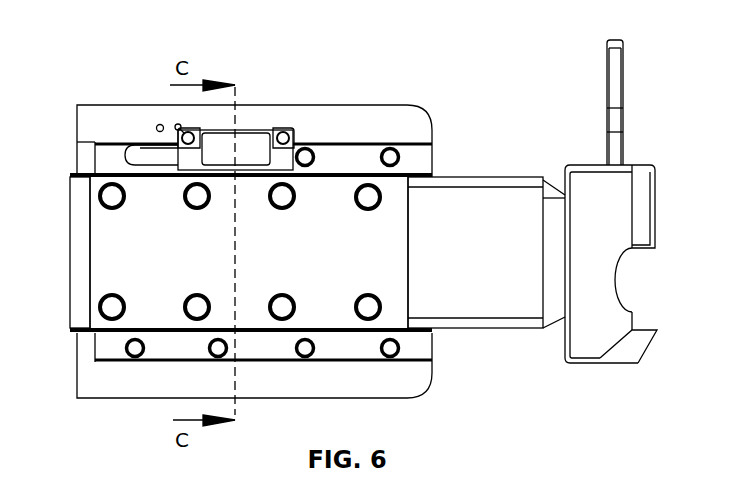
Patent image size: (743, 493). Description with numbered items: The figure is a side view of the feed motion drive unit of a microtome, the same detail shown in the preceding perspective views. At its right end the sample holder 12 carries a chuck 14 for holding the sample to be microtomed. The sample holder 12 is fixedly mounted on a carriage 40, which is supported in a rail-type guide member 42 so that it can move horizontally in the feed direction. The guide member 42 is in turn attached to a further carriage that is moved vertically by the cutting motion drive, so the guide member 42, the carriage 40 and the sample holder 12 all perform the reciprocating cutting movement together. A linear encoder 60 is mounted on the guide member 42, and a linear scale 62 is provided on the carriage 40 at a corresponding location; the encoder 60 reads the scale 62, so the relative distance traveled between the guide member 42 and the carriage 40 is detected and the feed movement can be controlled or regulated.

The sample holder 12 is at (672, 107).
The chuck 14 is at (632, 277).
The carriage 40 is at (490, 177).
The rail-type guide member 42 is at (330, 115).
The linear encoder 60 is at (248, 129).
The linear scale 62 is at (110, 170).